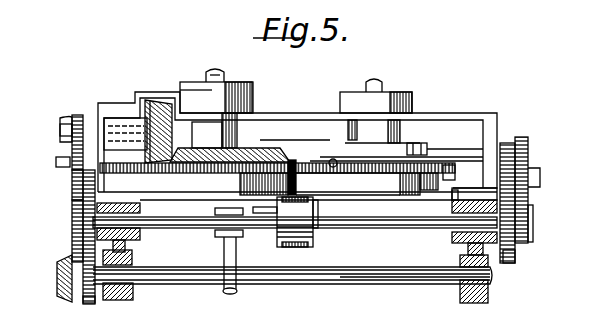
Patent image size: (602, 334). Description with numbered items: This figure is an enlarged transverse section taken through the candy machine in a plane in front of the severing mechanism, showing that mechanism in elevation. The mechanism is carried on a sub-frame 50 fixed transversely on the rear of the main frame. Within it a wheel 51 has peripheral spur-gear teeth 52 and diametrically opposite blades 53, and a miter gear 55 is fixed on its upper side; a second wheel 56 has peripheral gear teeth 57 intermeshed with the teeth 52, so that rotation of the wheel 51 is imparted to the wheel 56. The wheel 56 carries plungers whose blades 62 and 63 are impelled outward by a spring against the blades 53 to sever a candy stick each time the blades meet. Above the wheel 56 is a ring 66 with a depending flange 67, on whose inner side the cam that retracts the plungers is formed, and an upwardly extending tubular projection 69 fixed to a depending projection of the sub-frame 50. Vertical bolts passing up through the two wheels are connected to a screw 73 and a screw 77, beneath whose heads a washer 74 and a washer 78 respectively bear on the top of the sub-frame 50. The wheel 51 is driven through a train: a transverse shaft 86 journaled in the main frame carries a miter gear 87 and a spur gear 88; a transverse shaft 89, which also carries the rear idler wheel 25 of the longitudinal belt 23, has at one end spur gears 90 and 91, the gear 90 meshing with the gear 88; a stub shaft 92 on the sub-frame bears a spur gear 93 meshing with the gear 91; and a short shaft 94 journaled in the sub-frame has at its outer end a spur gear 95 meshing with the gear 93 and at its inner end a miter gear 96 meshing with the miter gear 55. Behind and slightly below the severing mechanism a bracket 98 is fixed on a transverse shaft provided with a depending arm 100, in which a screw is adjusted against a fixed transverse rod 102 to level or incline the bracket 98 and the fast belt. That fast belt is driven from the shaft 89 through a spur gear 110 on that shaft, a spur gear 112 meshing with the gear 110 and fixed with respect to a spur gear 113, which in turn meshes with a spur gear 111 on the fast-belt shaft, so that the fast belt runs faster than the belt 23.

The sub-frame 50 is at (433, 118).
The washer 74 is at (232, 81).
The screw 73 is at (215, 69).
The washer 78 is at (393, 91).
The screw 77 is at (380, 80).
The miter gear 96 is at (160, 103).
The miter gear 55 is at (252, 149).
The blades 53 is at (284, 167).
The blade 62 is at (300, 168).
The wheel 51 is at (233, 185).
The ring 66 is at (348, 183).
The wheel 56 is at (348, 185).
The gear teeth 57 is at (455, 175).
The tubular projection 69 is at (402, 149).
The depending flange 67 is at (430, 160).
The blade 63 is at (455, 186).
The transverse shaft 89 is at (200, 227).
The fixed transverse rod 102 is at (333, 281).
The transverse shaft 86 is at (398, 267).
The rear idler wheel 25 is at (295, 222).
The longitudinal belt 23 is at (317, 246).
The bracket 98 is at (250, 238).
The depending arm 100 is at (213, 268).
The spur gear 95 is at (78, 114).
The spur gear 93 is at (71, 186).
The spur gear 90 is at (72, 211).
The spur gear 91 is at (72, 234).
The short shaft 94 is at (63, 122).
The spur-gear teeth 52 is at (59, 129).
The stub shaft 92 is at (55, 163).
The miter gear 87 is at (58, 286).
The spur gear 88 is at (86, 304).
The spur gear 112 is at (507, 142).
The spur gear 113 is at (529, 150).
The spur gear 111 is at (534, 212).
The spur gear 110 is at (515, 258).